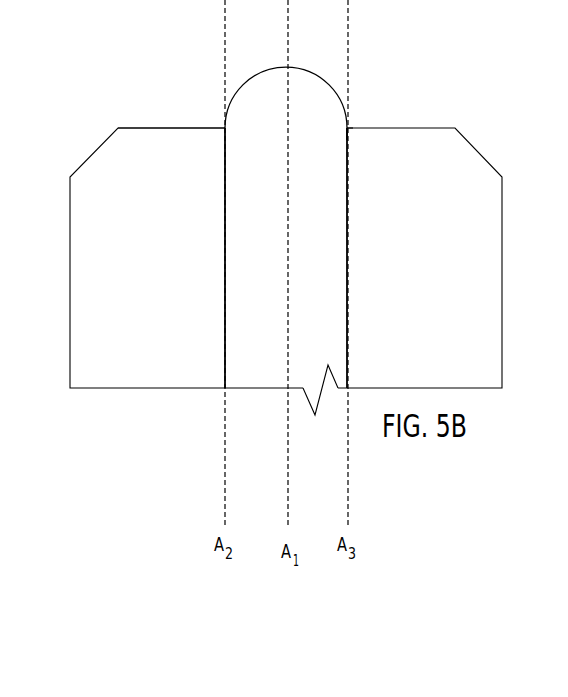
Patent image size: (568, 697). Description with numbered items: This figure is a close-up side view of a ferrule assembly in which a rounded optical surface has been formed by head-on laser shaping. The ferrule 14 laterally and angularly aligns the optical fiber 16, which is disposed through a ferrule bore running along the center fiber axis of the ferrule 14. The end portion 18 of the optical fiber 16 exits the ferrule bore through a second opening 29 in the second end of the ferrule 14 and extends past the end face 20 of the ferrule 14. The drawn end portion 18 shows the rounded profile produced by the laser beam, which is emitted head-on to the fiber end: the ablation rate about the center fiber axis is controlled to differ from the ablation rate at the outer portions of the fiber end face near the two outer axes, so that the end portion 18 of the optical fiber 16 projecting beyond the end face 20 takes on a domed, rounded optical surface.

The ferrule 14 is at (77, 217).
The optical fiber 16 is at (246, 276).
The end portion 18 is at (366, 110).
The end face 20 is at (152, 128).
The second opening 29 is at (358, 144).